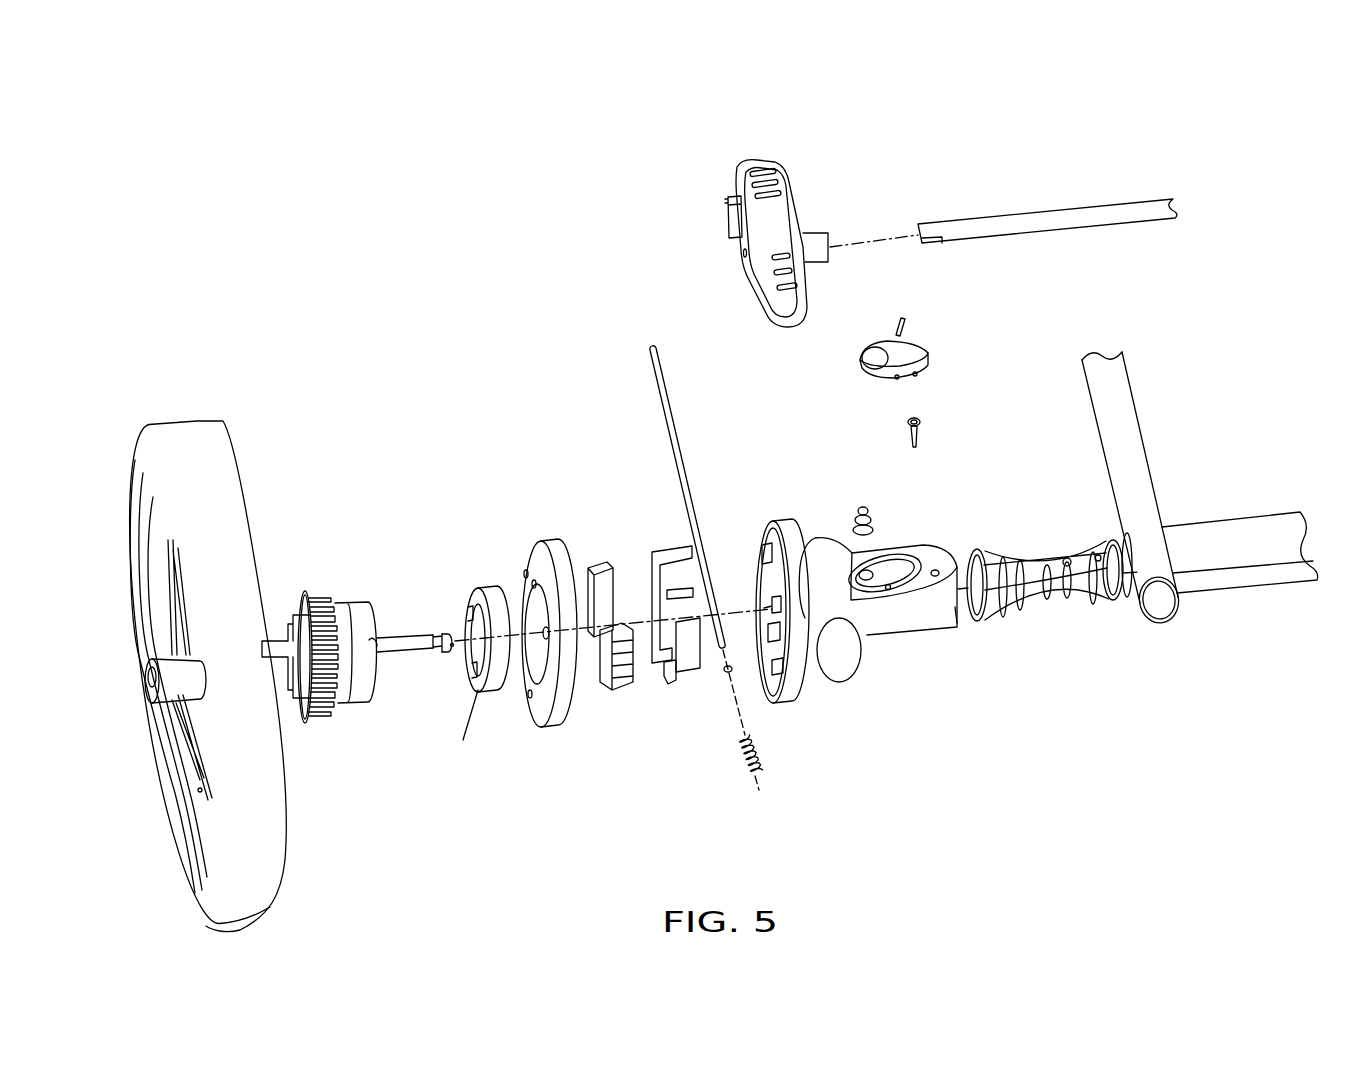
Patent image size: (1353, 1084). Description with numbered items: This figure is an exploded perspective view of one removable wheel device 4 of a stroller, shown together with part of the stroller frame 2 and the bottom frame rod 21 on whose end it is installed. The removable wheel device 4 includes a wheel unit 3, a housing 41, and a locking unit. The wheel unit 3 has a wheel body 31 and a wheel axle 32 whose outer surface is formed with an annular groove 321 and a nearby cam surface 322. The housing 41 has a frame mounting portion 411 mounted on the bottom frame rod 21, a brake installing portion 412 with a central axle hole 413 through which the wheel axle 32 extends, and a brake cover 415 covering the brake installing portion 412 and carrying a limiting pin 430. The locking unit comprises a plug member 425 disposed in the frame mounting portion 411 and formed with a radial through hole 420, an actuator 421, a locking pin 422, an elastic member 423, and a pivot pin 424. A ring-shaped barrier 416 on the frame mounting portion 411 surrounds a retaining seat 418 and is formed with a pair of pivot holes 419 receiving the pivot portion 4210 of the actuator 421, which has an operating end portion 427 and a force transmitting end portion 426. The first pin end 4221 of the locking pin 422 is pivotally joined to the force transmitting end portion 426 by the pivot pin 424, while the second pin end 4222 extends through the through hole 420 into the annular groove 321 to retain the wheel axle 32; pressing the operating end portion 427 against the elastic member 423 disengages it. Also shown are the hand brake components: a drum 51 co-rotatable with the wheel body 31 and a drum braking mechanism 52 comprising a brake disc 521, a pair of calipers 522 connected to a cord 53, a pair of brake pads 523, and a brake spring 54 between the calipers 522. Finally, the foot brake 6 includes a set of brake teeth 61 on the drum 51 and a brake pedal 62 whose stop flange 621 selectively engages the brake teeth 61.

The stroller frame 2 is at (1200, 489).
The bottom frame rod 21 is at (1236, 528).
The wheel unit 3 is at (196, 620).
The wheel body 31 is at (178, 432).
The wheel axle 32 is at (411, 632).
The annular groove 321 is at (438, 632).
The cam surface 322 is at (446, 652).
The removable wheel device 4 is at (787, 549).
The housing 41 is at (911, 612).
The frame mounting portion 411 is at (911, 612).
The brake installing portion 412 is at (783, 530).
The central axle hole 413 is at (764, 607).
The brake cover 415 is at (529, 606).
The ring-shaped barrier 416 is at (873, 590).
The retaining seat 418 is at (862, 572).
The pivot holes 419 is at (886, 558).
The through hole 420 is at (1068, 558).
The actuator 421 is at (920, 358).
The pivot portion 4210 is at (899, 377).
The locking pin 422 is at (924, 447).
The first pin end 4221 is at (908, 420).
The second pin end 4222 is at (916, 448).
The elastic member 423 is at (861, 506).
The pivot pin 424 is at (904, 322).
The plug member 425 is at (1045, 589).
The force transmitting end portion 426 is at (905, 351).
The operating end portion 427 is at (872, 358).
The limiting pin 430 is at (540, 625).
The drum 51 is at (366, 694).
The drum braking mechanism 52 is at (589, 635).
The brake disc 521 is at (494, 682).
The calipers 522 is at (688, 662).
The brake pads 523 is at (598, 566).
The cord 53 is at (673, 459).
The brake spring 54 is at (753, 773).
The foot brake 6 is at (920, 207).
The brake teeth 61 is at (330, 600).
The brake pedal 62 is at (762, 163).
The stop flange 621 is at (728, 226).